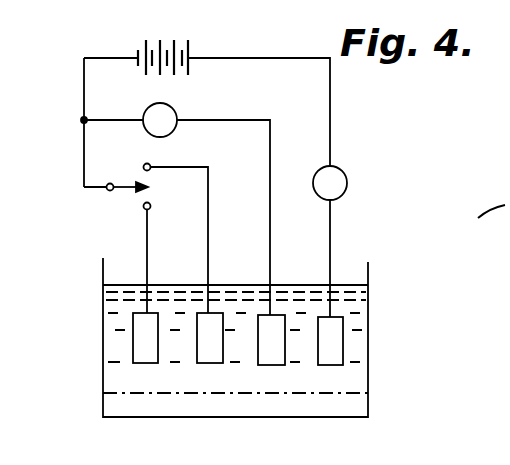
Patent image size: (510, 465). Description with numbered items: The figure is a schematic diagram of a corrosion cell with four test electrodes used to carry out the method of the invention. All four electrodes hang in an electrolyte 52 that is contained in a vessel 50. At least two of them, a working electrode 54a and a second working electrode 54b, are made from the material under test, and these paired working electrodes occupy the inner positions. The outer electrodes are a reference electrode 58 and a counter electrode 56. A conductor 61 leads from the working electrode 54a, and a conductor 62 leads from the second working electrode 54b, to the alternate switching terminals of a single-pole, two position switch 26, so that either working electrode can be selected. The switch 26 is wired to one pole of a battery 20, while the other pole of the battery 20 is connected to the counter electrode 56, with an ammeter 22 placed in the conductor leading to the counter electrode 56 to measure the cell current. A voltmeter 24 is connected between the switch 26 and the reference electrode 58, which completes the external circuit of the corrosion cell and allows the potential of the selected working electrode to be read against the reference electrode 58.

The battery 20 is at (190, 50).
The ammeter 22 is at (347, 182).
The voltmeter 24 is at (172, 132).
The single-pole, two position switch 26 is at (140, 164).
The vessel 50 is at (368, 393).
The electrolyte 52 is at (182, 402).
The working electrode 54a is at (133, 338).
The second working electrode 54b is at (215, 364).
The counter electrode 56 is at (343, 355).
The reference electrode 58 is at (283, 366).
The conductor 61 is at (147, 228).
The conductor 62 is at (208, 242).